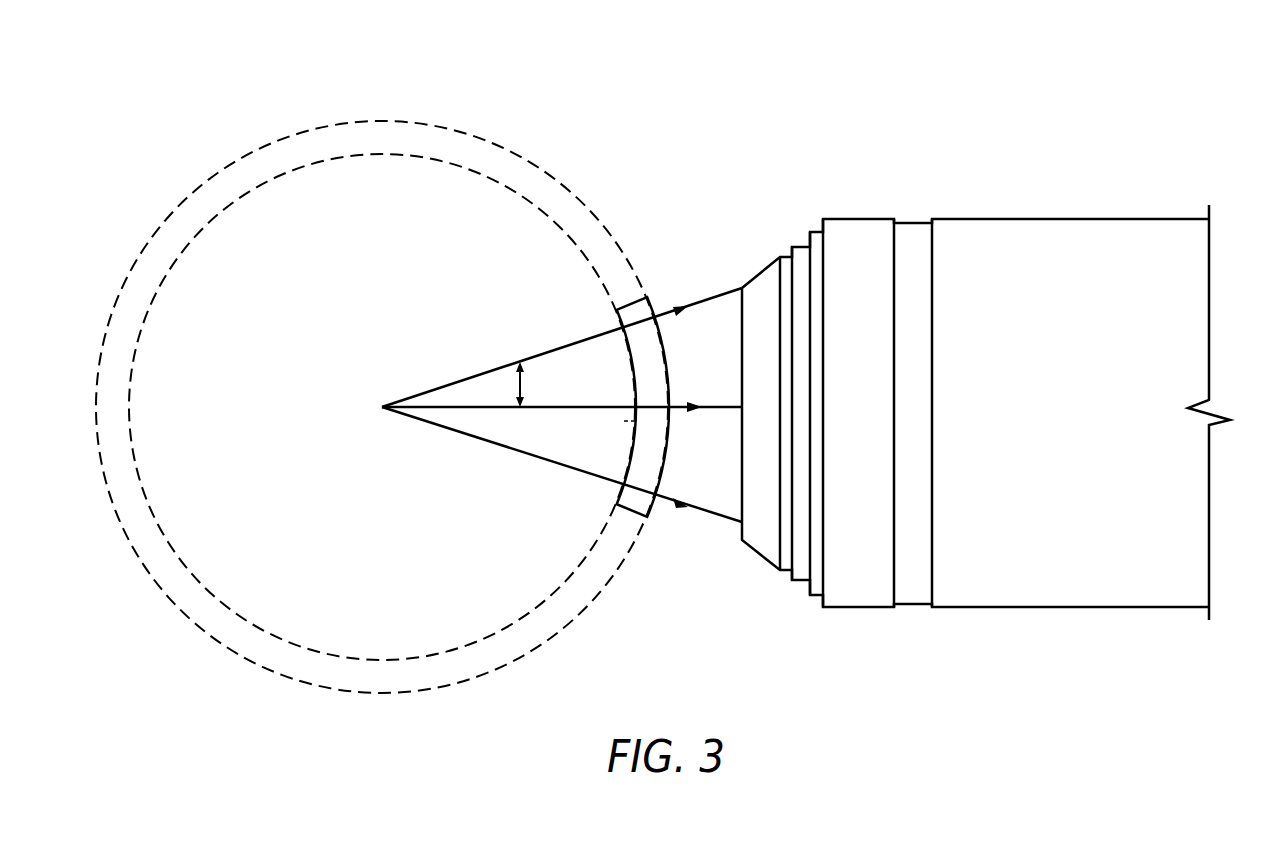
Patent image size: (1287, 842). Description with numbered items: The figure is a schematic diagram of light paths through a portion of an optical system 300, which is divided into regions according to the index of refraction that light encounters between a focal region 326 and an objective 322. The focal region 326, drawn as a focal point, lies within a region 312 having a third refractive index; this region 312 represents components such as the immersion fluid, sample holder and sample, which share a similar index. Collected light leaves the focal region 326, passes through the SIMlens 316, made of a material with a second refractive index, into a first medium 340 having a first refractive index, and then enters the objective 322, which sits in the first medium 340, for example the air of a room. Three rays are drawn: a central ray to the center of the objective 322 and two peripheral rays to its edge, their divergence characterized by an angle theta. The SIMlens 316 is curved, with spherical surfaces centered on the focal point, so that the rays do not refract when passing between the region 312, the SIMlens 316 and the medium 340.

The optical system 300 is at (668, 370).
The region 312 is at (312, 312).
The SIMlens 316 is at (628, 296).
The objective 322 is at (1007, 219).
The focal region 326 is at (381, 407).
The first medium 340 is at (764, 131).